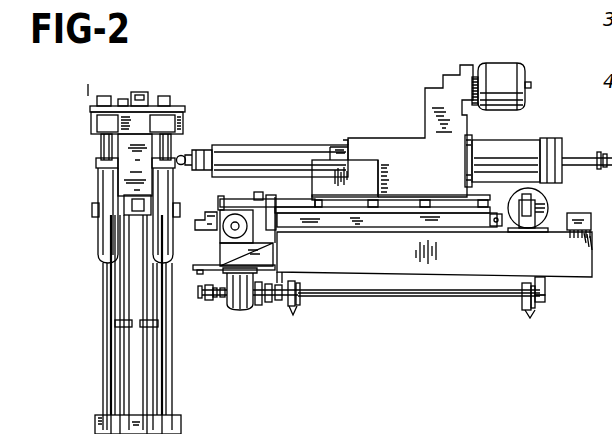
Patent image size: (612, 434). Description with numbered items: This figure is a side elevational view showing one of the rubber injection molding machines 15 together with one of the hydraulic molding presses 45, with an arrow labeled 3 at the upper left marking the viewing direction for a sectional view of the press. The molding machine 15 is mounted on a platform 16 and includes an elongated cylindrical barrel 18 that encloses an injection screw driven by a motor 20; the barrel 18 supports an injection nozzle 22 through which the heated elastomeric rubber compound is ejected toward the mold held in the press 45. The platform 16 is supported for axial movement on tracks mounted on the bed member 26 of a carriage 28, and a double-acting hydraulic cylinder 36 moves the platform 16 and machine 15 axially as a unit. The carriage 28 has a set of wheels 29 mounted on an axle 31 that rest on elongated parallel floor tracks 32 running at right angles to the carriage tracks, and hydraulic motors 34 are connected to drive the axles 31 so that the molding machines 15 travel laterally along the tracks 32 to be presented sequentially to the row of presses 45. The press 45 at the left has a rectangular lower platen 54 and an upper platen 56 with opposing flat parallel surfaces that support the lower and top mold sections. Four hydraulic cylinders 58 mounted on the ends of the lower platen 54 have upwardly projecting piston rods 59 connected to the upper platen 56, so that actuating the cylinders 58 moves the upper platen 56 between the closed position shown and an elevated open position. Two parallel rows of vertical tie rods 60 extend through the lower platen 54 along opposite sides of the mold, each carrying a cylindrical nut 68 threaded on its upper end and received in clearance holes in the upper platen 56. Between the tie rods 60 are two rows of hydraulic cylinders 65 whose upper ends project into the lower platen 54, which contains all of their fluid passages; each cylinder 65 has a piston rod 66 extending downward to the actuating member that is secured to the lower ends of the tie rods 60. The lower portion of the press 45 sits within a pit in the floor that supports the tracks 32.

The section line indicator for FIG. 3 is at (84, 90).
The rubber injection molding machine 15 is at (405, 127).
The platform 16 is at (398, 206).
The elongated cylindrical barrel 18 is at (282, 150).
The motor 20 is at (506, 70).
The injection nozzle 22 is at (186, 152).
The bed member 26 is at (440, 274).
The carriage 28 is at (557, 287).
The wheels 29 is at (298, 304).
The axle 31 is at (387, 298).
The tracks 32 is at (291, 316).
The hydraulic motors 34 is at (208, 303).
The double-acting hydraulic cylinder 36 is at (225, 199).
The molding press 45 is at (136, 87).
The lower platen 54 is at (130, 205).
The upper platen 56 is at (182, 122).
The hydraulic cylinders 58 is at (106, 236).
The piston rods 59 is at (108, 146).
The tie rods 60 is at (107, 348).
The hydraulic cylinders 65 is at (120, 310).
The piston rod 66 is at (129, 386).
The cylindrical nut 68 is at (178, 106).